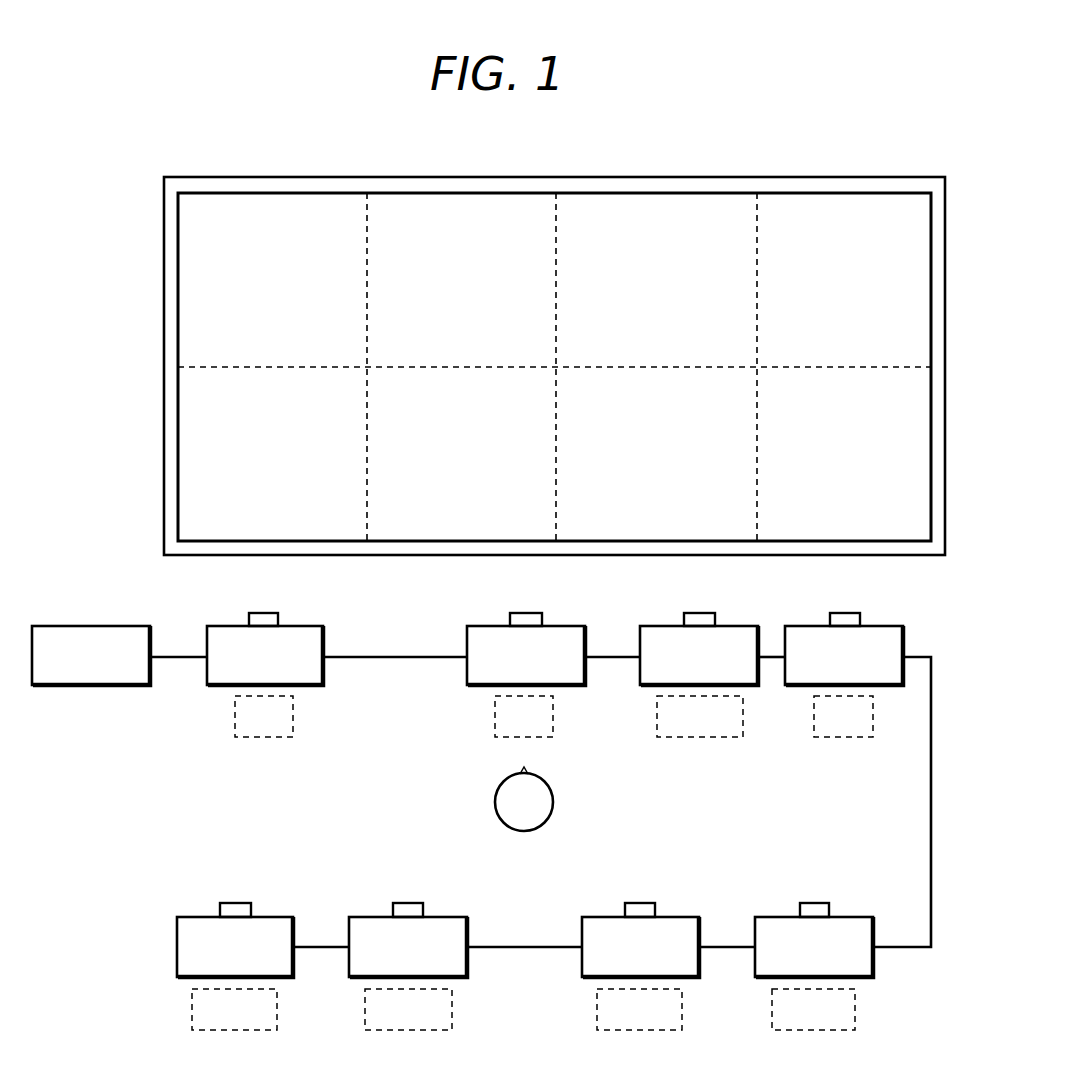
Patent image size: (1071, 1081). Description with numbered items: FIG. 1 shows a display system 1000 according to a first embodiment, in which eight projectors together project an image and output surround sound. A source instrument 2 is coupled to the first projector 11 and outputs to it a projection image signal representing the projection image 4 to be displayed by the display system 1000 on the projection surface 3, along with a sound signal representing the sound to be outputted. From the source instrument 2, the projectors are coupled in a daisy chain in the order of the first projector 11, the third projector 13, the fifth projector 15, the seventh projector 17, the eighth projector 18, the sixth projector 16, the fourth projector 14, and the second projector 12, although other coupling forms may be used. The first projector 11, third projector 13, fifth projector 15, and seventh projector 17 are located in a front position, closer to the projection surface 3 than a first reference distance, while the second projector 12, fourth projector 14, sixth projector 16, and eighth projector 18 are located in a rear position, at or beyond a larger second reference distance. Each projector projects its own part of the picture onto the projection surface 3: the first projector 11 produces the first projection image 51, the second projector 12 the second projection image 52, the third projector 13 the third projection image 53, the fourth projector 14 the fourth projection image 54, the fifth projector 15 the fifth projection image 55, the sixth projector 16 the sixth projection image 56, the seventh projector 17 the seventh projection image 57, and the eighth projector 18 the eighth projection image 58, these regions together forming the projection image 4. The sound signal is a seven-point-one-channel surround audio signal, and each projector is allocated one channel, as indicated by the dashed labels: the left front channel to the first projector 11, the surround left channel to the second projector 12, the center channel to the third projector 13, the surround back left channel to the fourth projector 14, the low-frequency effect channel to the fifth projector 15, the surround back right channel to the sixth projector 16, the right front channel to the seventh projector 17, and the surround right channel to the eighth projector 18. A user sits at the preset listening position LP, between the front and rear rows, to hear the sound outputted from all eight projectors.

The display system 1000 is at (114, 848).
The source instrument 2 is at (118, 626).
The projection surface 3 is at (164, 262).
The projection image 4 is at (178, 193).
The first projector 11 is at (300, 626).
The second projector 12 is at (262, 917).
The third projector 13 is at (554, 626).
The fourth projector 14 is at (438, 917).
The fifth projector 15 is at (726, 626).
The sixth projector 16 is at (670, 917).
The seventh projector 17 is at (872, 626).
The eighth projector 18 is at (847, 917).
The first projection image 51 is at (270, 207).
The second projection image 52 is at (311, 528).
The third projection image 53 is at (468, 207).
The fourth projection image 54 is at (436, 528).
The fifth projection image 55 is at (667, 207).
The sixth projection image 56 is at (634, 528).
The seventh projection image 57 is at (838, 212).
The eighth projection image 58 is at (818, 528).
The listening position LP is at (548, 780).